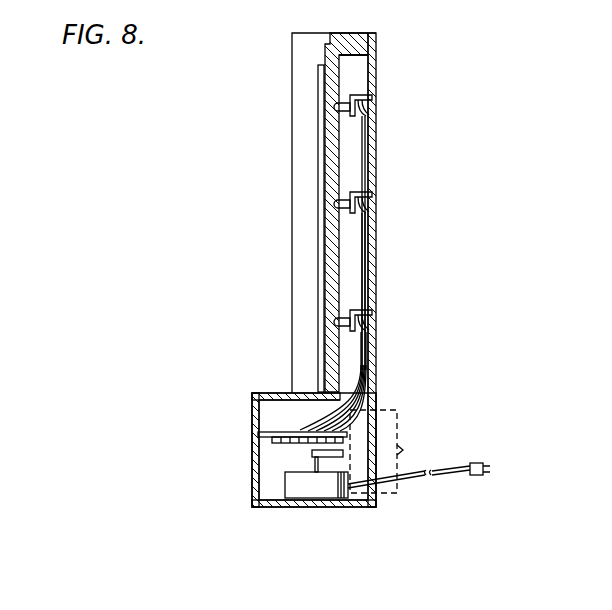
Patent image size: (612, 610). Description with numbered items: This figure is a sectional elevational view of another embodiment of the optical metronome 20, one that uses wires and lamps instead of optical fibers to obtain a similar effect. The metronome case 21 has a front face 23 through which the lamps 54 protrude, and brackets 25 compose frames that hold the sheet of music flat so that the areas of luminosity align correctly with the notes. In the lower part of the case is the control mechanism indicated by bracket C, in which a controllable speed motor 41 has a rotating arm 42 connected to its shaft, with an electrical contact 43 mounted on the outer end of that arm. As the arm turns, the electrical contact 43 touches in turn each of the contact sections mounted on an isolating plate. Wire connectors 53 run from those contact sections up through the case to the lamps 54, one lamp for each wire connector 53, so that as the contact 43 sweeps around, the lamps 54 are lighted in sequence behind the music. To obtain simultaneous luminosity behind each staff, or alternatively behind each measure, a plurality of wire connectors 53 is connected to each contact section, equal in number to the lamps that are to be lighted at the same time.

The optical metronome 20 is at (384, 209).
The metronome case 21 is at (377, 98).
The front face 23 is at (332, 145).
The brackets 25 is at (323, 237).
The lamps 54 is at (344, 101).
The wire connectors 53 is at (366, 275).
The rotating arm 42 is at (312, 457).
The electrical contact 43 is at (347, 443).
The controllable speed motor 41 is at (318, 490).
The control mechanism C is at (384, 451).